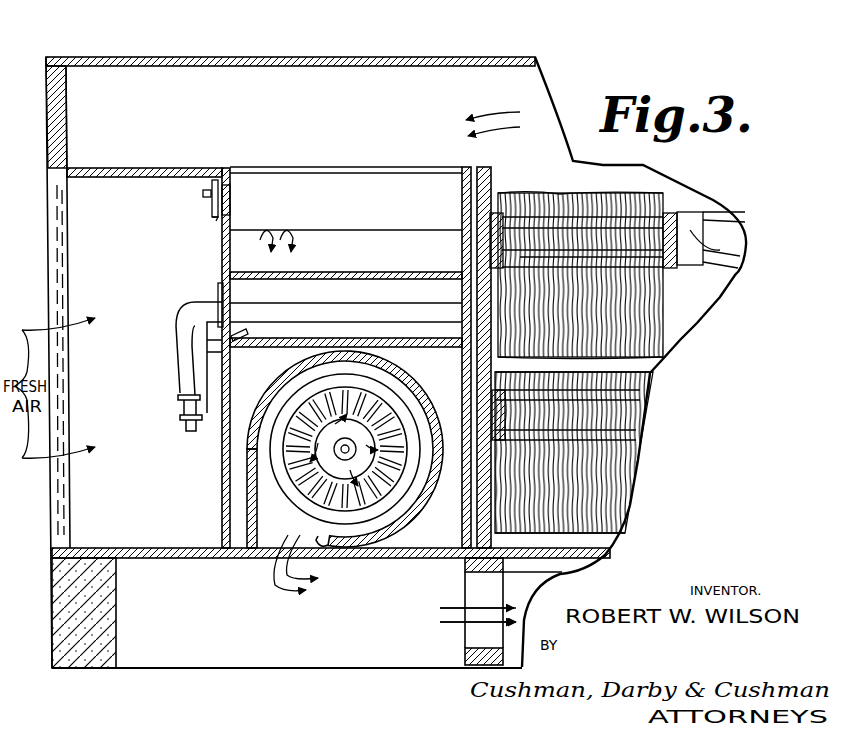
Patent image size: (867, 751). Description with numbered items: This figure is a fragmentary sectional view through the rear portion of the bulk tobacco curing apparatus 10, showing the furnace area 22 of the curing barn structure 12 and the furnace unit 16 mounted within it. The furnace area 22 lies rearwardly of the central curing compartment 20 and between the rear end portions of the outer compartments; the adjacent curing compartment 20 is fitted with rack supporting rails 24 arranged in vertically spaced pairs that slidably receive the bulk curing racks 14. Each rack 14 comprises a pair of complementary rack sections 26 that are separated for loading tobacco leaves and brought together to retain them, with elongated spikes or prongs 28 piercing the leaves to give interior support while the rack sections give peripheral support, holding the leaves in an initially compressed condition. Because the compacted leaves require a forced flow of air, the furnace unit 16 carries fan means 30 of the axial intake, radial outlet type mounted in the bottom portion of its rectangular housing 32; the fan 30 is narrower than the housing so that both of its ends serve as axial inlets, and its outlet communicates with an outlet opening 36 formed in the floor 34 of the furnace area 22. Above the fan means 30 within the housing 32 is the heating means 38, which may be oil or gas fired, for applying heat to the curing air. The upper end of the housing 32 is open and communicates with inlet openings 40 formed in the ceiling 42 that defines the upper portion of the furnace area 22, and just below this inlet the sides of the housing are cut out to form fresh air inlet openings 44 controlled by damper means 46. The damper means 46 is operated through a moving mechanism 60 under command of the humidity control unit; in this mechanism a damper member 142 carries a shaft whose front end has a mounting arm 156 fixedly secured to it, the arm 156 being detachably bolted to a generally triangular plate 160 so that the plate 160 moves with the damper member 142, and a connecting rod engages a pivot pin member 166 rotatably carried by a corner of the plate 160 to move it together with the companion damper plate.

The bulk tobacco curing apparatus 10 is at (155, 14).
The curing barn structure 12 is at (452, 24).
The bulk curing racks 14 is at (678, 221).
The furnace unit 16 is at (218, 252).
The curing compartments 20 is at (497, 183).
The furnace area 22 is at (85, 181).
The rack supporting rails 24 is at (735, 233).
The rack sections 26 is at (494, 238).
The spikes or prongs 28 is at (580, 216).
The fan means 30 is at (244, 455).
The housing 32 is at (222, 275).
The floor 34 is at (166, 547).
The outlet opening 36 is at (258, 560).
The heating means 38 is at (192, 305).
The inlet openings 40 is at (236, 166).
The ceiling 42 is at (118, 180).
The fresh air inlet openings 44 is at (312, 232).
The damper means 46 is at (364, 171).
The moving mechanism 60 is at (207, 187).
The damper member 142 is at (346, 214).
The mounting arm 156 is at (231, 198).
The plate 160 is at (213, 216).
The pivot pin member 166 is at (207, 203).